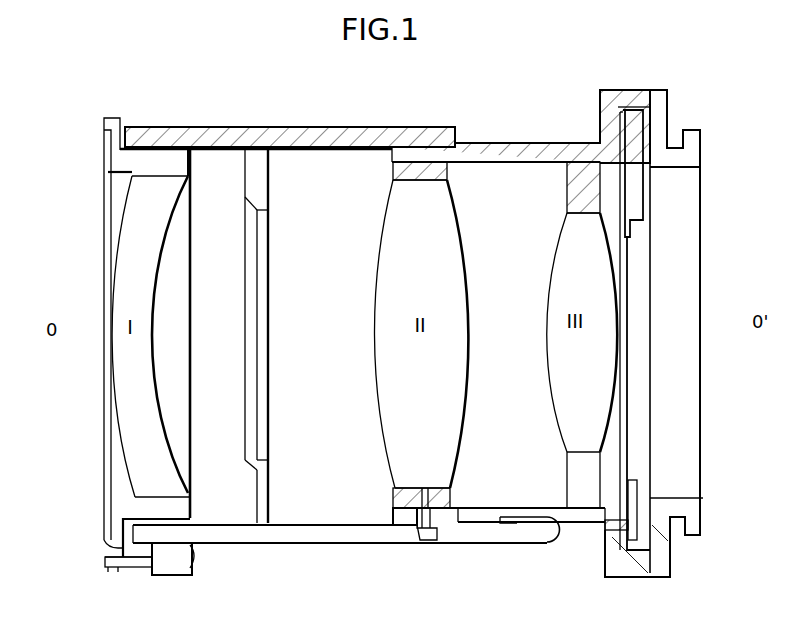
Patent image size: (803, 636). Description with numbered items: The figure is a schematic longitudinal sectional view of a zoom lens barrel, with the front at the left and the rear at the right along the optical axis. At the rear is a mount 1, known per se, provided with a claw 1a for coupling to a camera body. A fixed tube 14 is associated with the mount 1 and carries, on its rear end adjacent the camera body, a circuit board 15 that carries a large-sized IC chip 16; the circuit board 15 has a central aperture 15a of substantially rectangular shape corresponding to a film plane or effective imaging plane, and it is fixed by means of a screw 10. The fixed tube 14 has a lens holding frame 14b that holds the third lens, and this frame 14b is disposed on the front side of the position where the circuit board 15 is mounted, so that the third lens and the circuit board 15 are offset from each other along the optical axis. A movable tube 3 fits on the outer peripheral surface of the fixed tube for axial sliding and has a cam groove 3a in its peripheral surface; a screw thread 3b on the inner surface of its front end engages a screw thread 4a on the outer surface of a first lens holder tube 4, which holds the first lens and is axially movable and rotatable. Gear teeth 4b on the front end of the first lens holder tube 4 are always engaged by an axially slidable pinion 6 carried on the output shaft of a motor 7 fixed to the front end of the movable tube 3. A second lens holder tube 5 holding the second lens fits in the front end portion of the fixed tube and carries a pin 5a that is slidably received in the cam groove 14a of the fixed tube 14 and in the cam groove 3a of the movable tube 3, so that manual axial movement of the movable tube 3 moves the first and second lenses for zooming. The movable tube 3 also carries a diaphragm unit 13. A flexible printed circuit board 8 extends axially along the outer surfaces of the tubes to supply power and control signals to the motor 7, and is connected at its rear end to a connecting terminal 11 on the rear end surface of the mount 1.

The mount 1 is at (664, 102).
The claw 1a is at (700, 157).
The movable tube 3 is at (324, 127).
The cam groove 3a is at (436, 532).
The screw thread 3b is at (186, 160).
The first lens holder tube 4 is at (123, 168).
The screw thread 4a is at (188, 170).
The gear teeth 4b is at (108, 542).
The second lens holder tube 5 is at (397, 494).
The pin 5a is at (427, 535).
The pinion 6 is at (118, 572).
The motor 7 is at (178, 575).
The flexible printed circuit board 8 is at (526, 545).
The screw 10 is at (640, 515).
The connecting terminal 11 is at (670, 560).
The diaphragm unit 13 is at (268, 196).
The fixed tube 14 is at (496, 143).
The cam groove 14a is at (416, 516).
The lens holding frame 14b is at (573, 196).
The circuit board 15 is at (630, 238).
The central aperture 15a is at (628, 282).
The large-sized IC chip 16 is at (635, 135).